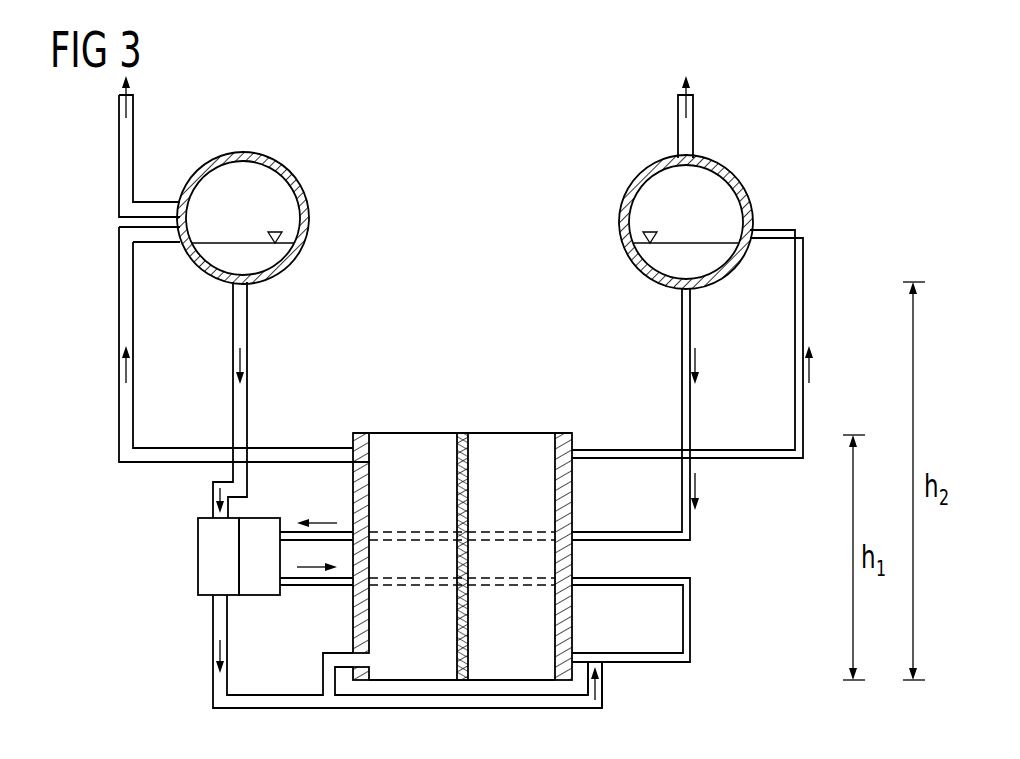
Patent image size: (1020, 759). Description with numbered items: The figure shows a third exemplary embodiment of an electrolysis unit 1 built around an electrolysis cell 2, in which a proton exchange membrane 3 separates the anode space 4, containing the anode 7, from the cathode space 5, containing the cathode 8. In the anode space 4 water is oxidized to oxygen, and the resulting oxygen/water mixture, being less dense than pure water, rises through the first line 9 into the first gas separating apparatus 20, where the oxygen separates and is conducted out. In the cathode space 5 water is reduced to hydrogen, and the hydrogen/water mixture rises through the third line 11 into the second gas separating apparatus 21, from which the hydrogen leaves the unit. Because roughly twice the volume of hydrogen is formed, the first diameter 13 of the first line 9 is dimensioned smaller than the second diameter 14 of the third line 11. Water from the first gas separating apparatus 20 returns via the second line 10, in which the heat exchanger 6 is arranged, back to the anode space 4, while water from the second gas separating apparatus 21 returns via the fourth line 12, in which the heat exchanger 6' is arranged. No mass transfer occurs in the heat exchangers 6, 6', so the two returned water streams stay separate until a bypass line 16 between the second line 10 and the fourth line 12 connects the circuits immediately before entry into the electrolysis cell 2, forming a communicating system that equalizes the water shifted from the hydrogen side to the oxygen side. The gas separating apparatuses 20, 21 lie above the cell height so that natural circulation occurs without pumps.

The electrolysis unit 1 is at (814, 82).
The electrolysis cell 2 is at (505, 433).
The proton exchange membrane 3 is at (463, 433).
The anode space 4 is at (518, 510).
The cathode space 5 is at (420, 510).
The heat exchanger 6 is at (218, 556).
The heat exchanger 6' is at (296, 556).
The anode 7 is at (561, 433).
The cathode 8 is at (362, 433).
The first line 9 is at (803, 310).
The second line 10 is at (690, 312).
The third line 11 is at (133, 310).
The fourth line 12 is at (247, 310).
The first diameter 13 is at (765, 403).
The second diameter 14 is at (90, 403).
The bypass line 16 is at (602, 692).
The first gas separating apparatus 20 is at (617, 214).
The second gas separating apparatus 21 is at (308, 214).